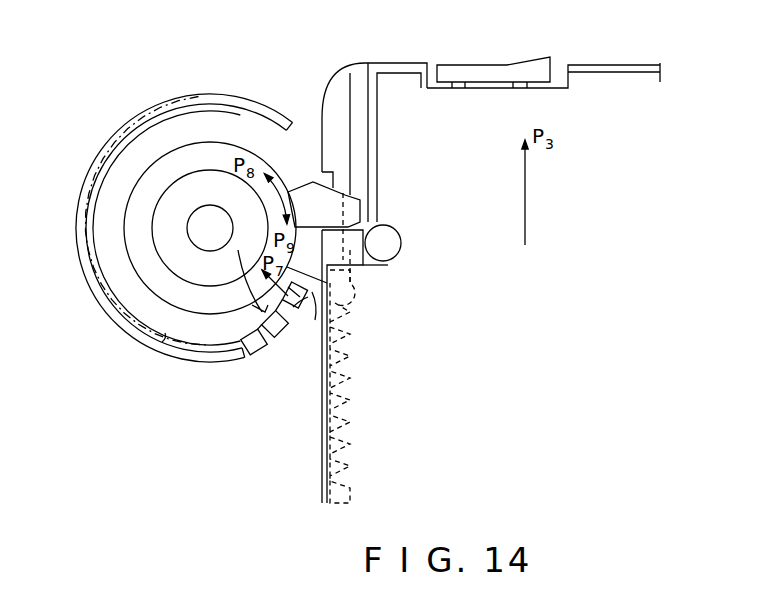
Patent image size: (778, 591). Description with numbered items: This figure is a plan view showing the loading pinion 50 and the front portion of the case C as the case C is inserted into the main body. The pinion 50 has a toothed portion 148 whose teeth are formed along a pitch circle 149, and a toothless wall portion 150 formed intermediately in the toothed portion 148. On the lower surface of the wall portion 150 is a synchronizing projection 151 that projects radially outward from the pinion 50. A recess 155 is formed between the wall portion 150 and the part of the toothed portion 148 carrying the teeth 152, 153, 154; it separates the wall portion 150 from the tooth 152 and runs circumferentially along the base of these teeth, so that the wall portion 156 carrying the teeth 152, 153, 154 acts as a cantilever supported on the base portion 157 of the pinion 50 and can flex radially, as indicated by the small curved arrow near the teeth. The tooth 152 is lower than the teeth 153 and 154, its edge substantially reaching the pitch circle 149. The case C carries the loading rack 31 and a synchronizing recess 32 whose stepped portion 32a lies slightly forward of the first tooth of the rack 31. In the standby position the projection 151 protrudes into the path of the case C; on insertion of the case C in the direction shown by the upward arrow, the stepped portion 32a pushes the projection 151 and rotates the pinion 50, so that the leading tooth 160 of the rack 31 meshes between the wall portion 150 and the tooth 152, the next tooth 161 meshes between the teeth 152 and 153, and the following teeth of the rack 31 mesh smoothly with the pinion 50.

The loading pinion 50 is at (128, 118).
The toothed portion 148 is at (232, 95).
The pitch circle 149 is at (162, 342).
The wall portion 150 is at (368, 266).
The synchronizing projection 151 is at (352, 203).
The tooth 152 is at (300, 297).
The tooth 153 is at (287, 320).
The tooth 154 is at (263, 347).
The recess 155 is at (246, 274).
The wall portion 156 is at (257, 307).
The base portion 157 is at (223, 327).
The leading tooth 160 is at (345, 293).
The tooth 161 is at (352, 328).
The loading rack 31 is at (333, 477).
The synchronizing recess 32 is at (370, 147).
The stepped portion 32a is at (350, 227).
The case C is at (617, 62).